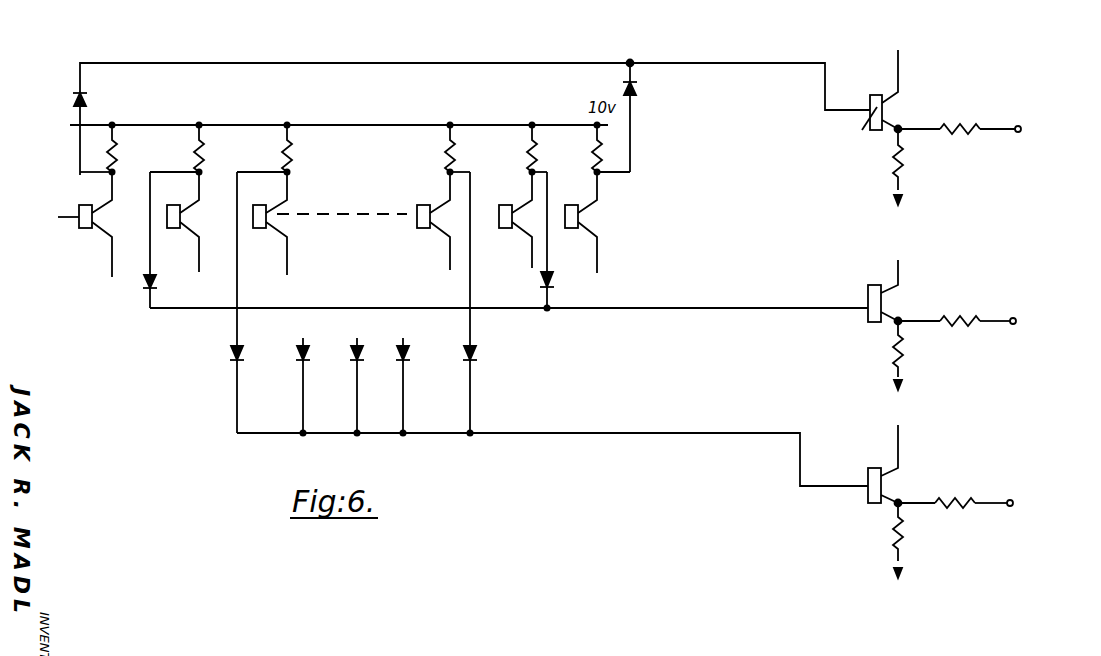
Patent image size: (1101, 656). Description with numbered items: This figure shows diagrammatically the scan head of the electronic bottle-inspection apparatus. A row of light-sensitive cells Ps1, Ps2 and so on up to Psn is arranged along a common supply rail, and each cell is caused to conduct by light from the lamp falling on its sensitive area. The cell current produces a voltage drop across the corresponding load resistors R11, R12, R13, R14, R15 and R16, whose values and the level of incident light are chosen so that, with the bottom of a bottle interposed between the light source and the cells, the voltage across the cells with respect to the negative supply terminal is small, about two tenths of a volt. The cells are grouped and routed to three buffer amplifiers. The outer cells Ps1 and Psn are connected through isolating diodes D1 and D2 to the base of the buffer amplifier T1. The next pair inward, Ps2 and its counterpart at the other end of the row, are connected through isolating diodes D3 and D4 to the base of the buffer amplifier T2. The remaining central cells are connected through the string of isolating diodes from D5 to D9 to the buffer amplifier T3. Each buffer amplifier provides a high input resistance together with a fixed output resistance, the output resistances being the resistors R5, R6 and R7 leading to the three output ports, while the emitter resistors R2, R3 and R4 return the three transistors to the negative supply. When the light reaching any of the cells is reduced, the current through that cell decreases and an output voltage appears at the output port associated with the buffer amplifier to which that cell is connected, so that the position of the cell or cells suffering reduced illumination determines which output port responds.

The isolating diode D1 is at (95, 100).
The isolating diode D2 is at (646, 91).
The isolating diode D3 is at (163, 285).
The isolating diode D4 is at (562, 278).
The isolating diode D5 is at (221, 357).
The isolating diode D9 is at (456, 357).
The cell load resistor R11 is at (128, 148).
The cell load resistor R12 is at (215, 148).
The cell load resistor R13 is at (303, 148).
The cell load resistor R14 is at (467, 148).
The cell load resistor R15 is at (549, 148).
The cell load resistor R16 is at (613, 148).
The scan head cell Ps1 is at (67, 230).
The scan head cell Ps2 is at (178, 222).
The scan head cell Psn is at (575, 222).
The buffer amplifier T1 is at (873, 102).
The buffer amplifier T2 is at (890, 292).
The buffer amplifier T3 is at (891, 466).
The emitter resistor R2 is at (911, 167).
The emitter resistor R3 is at (911, 355).
The emitter resistor R4 is at (912, 540).
The output resistor R5 is at (974, 119).
The output resistor R6 is at (972, 337).
The output resistor R7 is at (968, 495).